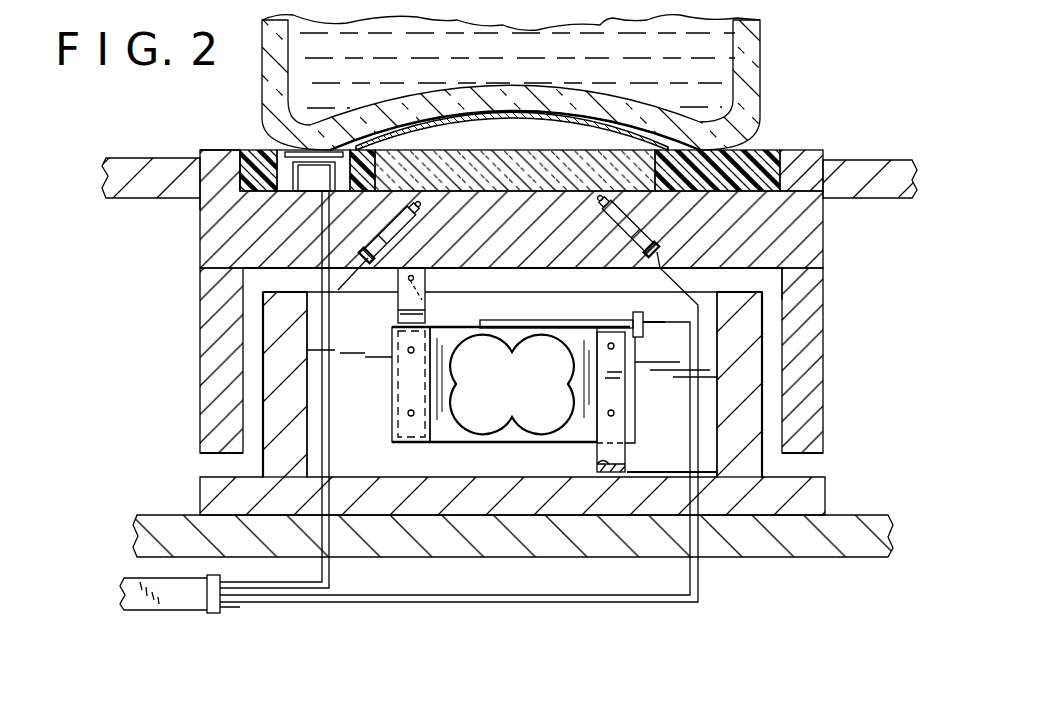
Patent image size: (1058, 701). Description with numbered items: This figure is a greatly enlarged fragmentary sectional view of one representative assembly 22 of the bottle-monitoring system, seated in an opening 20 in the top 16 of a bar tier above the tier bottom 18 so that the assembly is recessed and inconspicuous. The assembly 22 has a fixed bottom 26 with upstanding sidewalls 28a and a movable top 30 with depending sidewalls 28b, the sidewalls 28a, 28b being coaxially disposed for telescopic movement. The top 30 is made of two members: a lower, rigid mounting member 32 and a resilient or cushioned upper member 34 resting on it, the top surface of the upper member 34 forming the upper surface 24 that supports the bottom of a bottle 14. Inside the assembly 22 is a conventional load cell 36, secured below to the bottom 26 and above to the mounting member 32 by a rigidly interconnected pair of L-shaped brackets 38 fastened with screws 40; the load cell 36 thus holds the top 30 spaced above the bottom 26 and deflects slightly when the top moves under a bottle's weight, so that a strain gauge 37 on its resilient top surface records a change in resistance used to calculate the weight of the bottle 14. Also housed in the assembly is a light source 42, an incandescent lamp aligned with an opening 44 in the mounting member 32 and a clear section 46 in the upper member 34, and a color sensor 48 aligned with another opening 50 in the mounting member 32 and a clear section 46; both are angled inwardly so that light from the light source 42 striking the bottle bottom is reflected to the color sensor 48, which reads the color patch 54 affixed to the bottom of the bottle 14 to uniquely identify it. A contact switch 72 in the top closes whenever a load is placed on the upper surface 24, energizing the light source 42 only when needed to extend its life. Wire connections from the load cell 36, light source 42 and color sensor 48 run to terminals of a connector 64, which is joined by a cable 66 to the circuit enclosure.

The bottle 14 is at (762, 58).
The top 16 is at (905, 198).
The bottom 18 is at (800, 533).
The opening 20 is at (187, 203).
The assembly 22 is at (825, 325).
The upper surface 24 is at (780, 150).
The bottom 26 is at (418, 477).
The upstanding sidewalls 28a is at (763, 458).
The depending sidewalls 28b is at (220, 407).
The top 30 is at (198, 152).
The mounting member 32 is at (745, 253).
The upper member 34 is at (782, 168).
The load cell 36 is at (392, 400).
The strain gauge 37 is at (530, 320).
The L-shaped brackets 38 is at (395, 306).
The screws 40 is at (422, 300).
The light source 42 is at (405, 237).
The opening 44 is at (512, 372).
The clear section 46 is at (417, 155).
The color sensor 48 is at (618, 242).
The opening 50 is at (455, 433).
The color patch 54 is at (607, 130).
The connector 64 is at (223, 610).
The cable 66 is at (183, 597).
The contact switch 72 is at (282, 150).